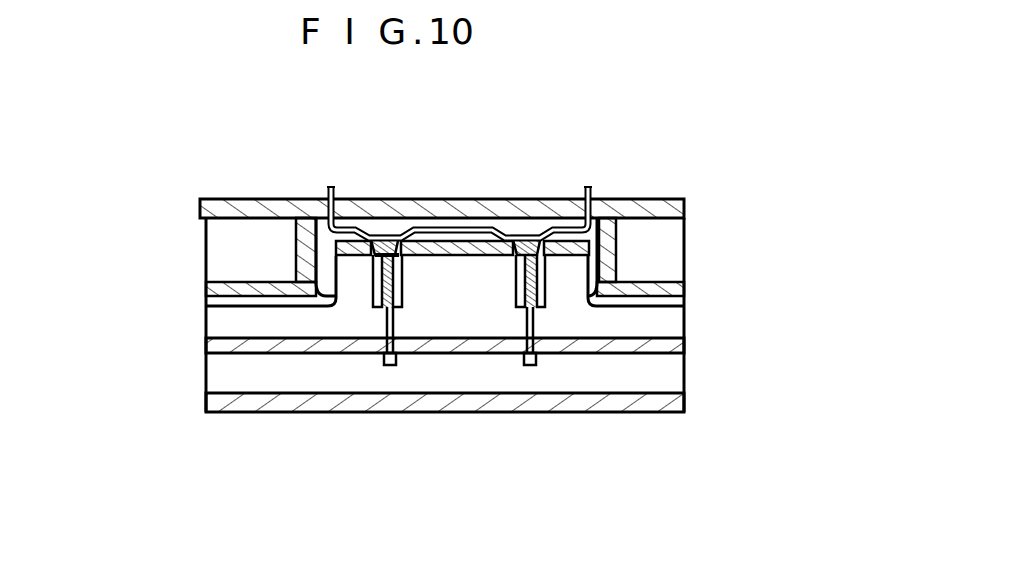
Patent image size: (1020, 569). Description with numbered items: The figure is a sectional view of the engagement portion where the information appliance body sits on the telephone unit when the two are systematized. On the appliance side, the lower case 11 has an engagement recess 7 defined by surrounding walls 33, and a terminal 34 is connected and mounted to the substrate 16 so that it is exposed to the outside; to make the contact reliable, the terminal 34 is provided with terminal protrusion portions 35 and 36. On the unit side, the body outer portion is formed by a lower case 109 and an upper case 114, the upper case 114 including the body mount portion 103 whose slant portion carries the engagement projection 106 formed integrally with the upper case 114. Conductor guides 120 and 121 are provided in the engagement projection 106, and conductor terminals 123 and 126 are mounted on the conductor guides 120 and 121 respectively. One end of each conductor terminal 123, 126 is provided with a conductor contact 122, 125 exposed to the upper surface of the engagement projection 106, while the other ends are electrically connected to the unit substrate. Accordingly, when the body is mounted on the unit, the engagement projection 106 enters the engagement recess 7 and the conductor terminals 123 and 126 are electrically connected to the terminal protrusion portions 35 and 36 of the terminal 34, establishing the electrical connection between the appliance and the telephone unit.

The engagement recess 7 is at (322, 228).
The lower case 11 is at (658, 278).
The substrate 16 is at (658, 198).
The surrounding walls 33 is at (300, 238).
The terminal 34 is at (460, 228).
The terminal protrusion portion 35 is at (528, 236).
The terminal protrusion portion 36 is at (385, 236).
The body mount portion 103 is at (463, 354).
The engagement projection 106 is at (566, 228).
The lower case 109 is at (224, 412).
The upper case 114 is at (657, 305).
The conductor guide 120 is at (543, 290).
The conductor guide 121 is at (403, 262).
The conductor contact 122 is at (516, 259).
The conductor terminal 123 is at (535, 323).
The conductor contact 125 is at (377, 246).
The conductor terminal 126 is at (387, 318).